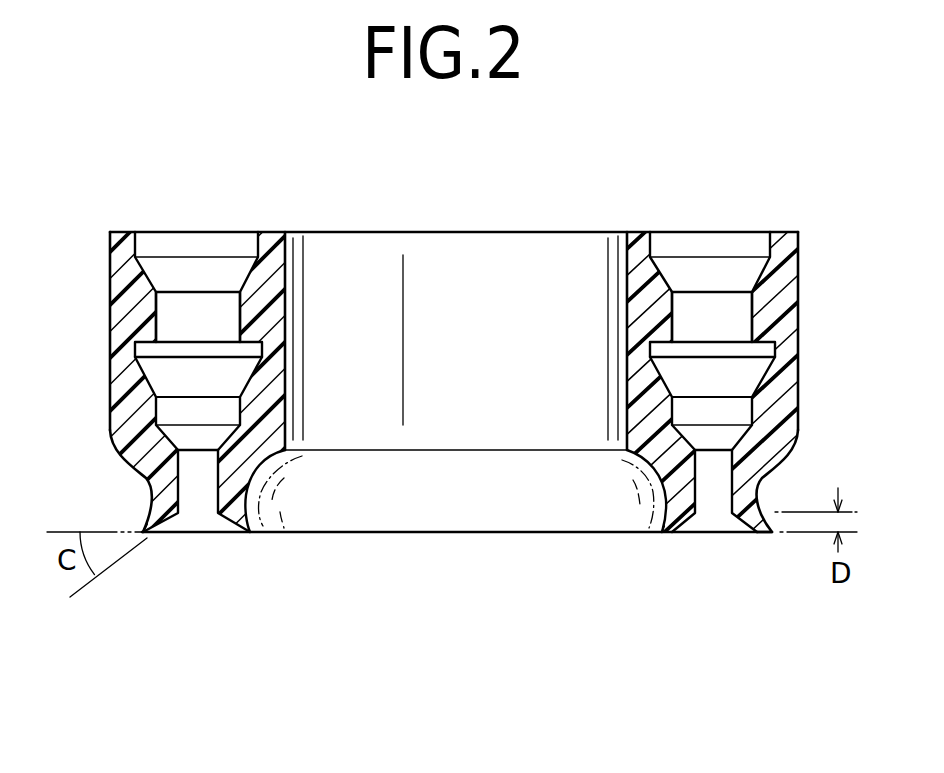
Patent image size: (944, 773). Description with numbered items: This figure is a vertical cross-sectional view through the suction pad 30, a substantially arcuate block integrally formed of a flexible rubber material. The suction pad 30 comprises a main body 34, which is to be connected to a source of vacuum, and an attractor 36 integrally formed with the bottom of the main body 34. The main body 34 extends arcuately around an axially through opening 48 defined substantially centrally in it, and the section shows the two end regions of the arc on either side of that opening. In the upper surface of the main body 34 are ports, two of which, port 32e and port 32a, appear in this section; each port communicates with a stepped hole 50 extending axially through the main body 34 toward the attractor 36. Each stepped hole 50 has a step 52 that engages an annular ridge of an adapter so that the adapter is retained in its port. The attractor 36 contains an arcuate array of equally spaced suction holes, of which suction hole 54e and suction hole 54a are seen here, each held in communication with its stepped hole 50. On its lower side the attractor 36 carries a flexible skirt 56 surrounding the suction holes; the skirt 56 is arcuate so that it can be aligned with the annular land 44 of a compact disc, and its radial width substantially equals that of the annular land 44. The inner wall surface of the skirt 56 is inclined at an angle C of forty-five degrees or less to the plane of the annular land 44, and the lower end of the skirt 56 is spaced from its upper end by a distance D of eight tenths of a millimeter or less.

The suction pad 30 is at (770, 192).
The port 32e is at (138, 248).
The port 32a is at (652, 238).
The main body 34 is at (802, 332).
The attractor 36 is at (771, 500).
The annular land 44 is at (379, 531).
The through opening 48 is at (288, 282).
The stepped hole 50 is at (158, 298).
The step 52 is at (162, 357).
The suction hole 54e is at (180, 493).
The suction hole 54a is at (693, 492).
The skirt 56 is at (142, 527).